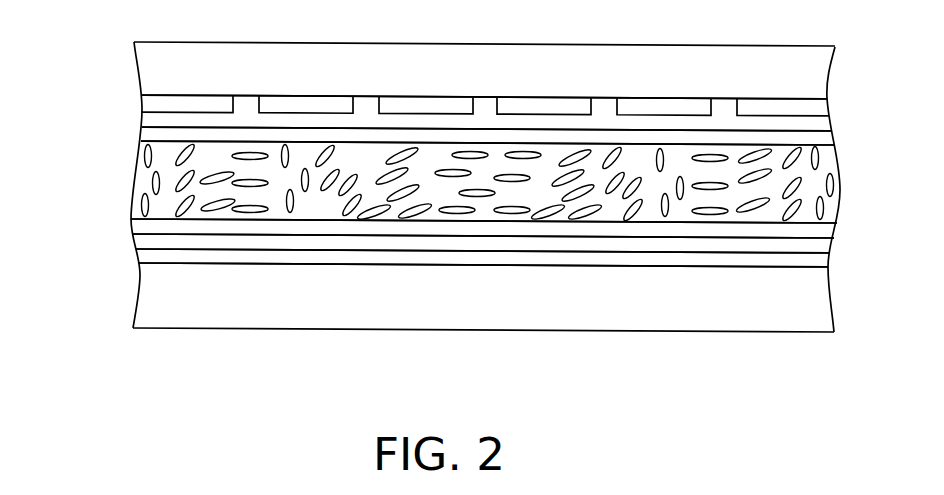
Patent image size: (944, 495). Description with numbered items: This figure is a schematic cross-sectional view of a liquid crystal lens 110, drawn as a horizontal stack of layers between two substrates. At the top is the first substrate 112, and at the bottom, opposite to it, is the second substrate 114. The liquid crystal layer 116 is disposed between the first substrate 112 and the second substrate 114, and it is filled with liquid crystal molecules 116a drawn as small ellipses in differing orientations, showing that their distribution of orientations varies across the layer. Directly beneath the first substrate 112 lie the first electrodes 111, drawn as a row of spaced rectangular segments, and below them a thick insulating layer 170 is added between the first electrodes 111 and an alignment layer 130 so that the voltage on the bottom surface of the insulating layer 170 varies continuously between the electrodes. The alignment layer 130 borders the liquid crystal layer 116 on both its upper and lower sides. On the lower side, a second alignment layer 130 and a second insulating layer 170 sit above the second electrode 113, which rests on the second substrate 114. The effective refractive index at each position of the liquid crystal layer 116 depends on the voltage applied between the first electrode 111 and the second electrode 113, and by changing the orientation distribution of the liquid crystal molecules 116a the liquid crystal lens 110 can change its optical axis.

The liquid crystal lens 110 is at (813, 396).
The first substrate 112 is at (153, 66).
The first electrode 111 is at (153, 103).
The thick insulating layer 170 is at (152, 122).
The alignment layer 130 is at (152, 131).
The liquid crystal layer 116 is at (141, 177).
The liquid crystal molecules 116a is at (145, 207).
The second electrode 113 is at (143, 260).
The second substrate 114 is at (152, 308).